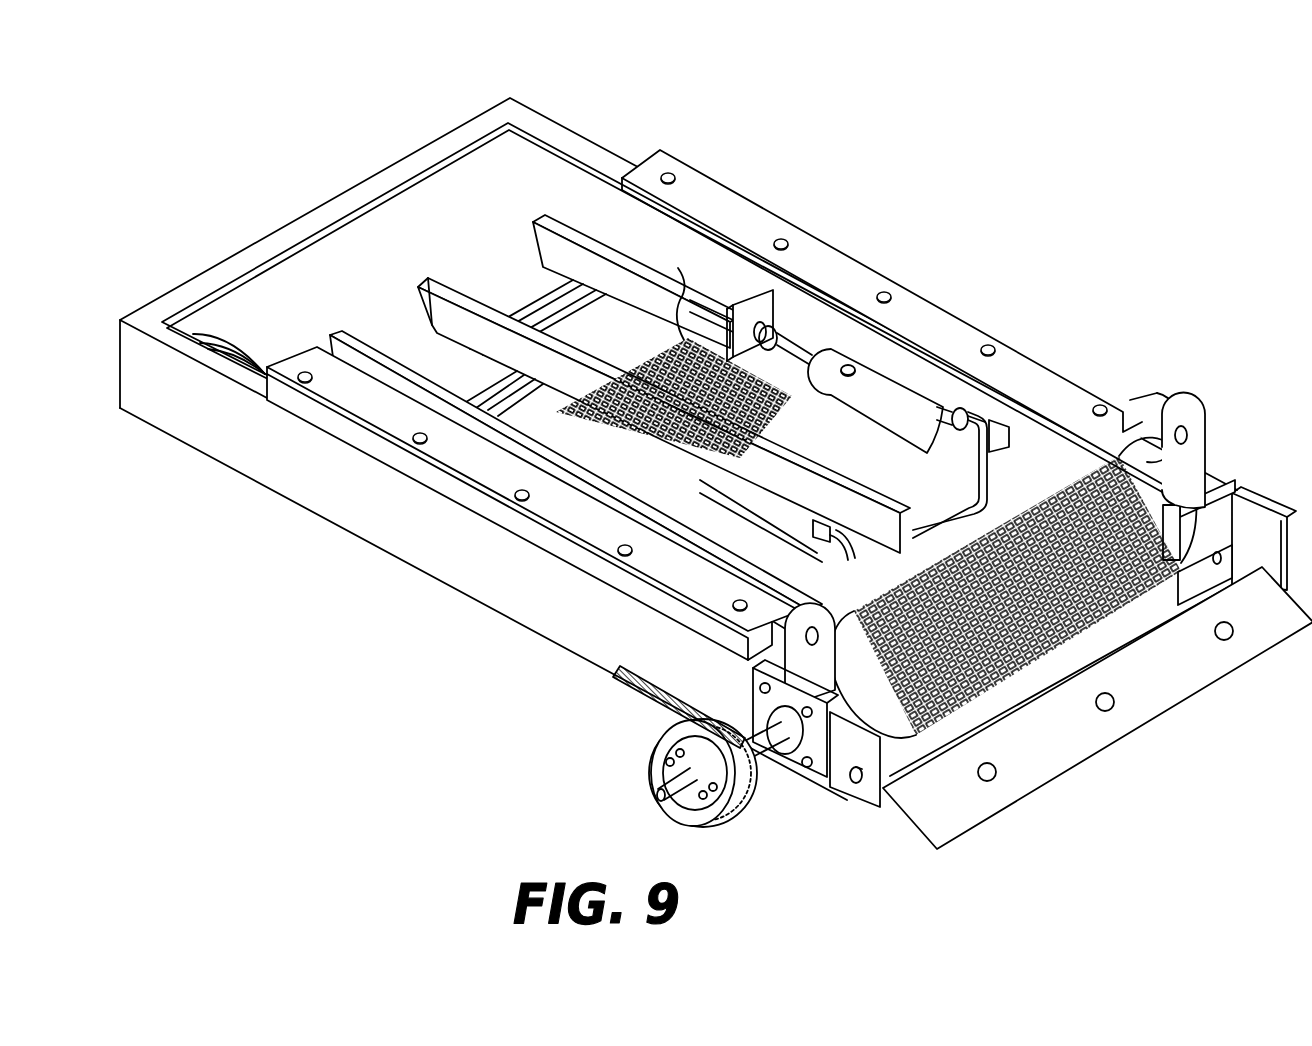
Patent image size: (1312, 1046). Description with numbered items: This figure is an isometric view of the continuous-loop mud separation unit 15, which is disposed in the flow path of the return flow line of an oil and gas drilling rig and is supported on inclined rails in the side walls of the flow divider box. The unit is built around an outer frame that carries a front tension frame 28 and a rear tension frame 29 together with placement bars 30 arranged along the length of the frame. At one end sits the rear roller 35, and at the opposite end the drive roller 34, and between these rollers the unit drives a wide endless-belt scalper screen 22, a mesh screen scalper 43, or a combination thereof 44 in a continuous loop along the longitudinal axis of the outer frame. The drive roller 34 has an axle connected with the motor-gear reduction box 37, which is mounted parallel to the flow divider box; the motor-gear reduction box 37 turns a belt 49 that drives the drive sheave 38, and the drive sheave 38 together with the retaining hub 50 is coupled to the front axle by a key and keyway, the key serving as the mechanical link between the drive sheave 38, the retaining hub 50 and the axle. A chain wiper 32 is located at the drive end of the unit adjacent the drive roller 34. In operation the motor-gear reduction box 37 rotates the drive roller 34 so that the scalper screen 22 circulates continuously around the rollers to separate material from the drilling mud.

The mud separation unit 15 is at (491, 107).
The rear roller 35 is at (265, 310).
The placement bars 30 is at (583, 267).
The rear tension frame 29 is at (707, 310).
The endless-belt scalper screen 22 is at (856, 322).
The mesh screen scalper 43 is at (896, 401).
The combination scalper screen 44 is at (783, 344).
The motor-gear reduction box 37 is at (937, 325).
The front tension frame 28 is at (1017, 433).
The drive roller 34 is at (1150, 510).
The drive sheave 38 is at (676, 773).
The retaining hub 50 is at (663, 733).
The belt 49 is at (620, 672).
The chain wiper 32 is at (1083, 733).